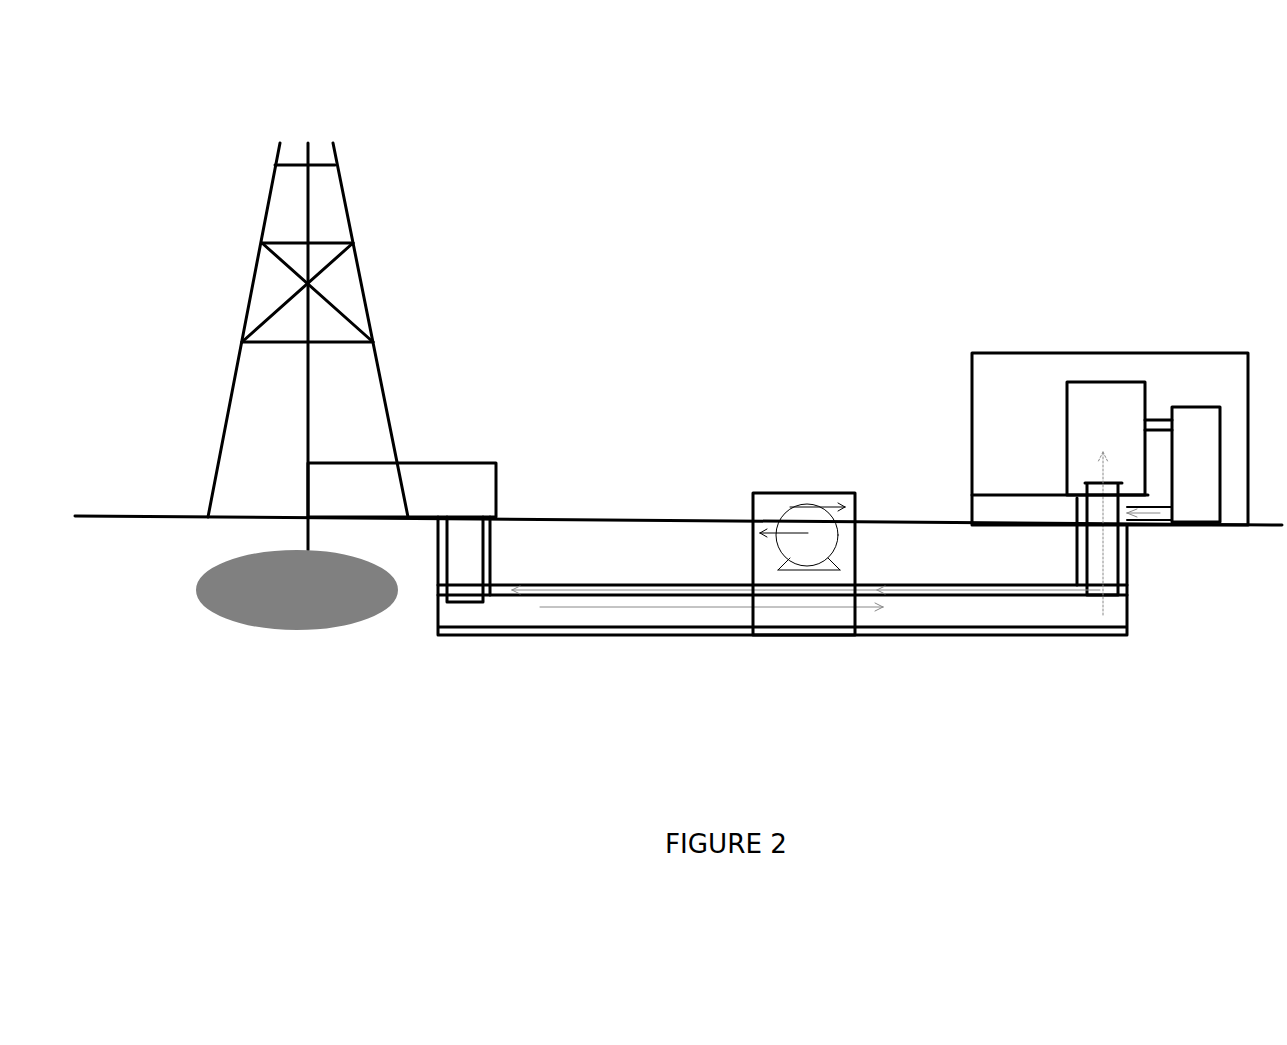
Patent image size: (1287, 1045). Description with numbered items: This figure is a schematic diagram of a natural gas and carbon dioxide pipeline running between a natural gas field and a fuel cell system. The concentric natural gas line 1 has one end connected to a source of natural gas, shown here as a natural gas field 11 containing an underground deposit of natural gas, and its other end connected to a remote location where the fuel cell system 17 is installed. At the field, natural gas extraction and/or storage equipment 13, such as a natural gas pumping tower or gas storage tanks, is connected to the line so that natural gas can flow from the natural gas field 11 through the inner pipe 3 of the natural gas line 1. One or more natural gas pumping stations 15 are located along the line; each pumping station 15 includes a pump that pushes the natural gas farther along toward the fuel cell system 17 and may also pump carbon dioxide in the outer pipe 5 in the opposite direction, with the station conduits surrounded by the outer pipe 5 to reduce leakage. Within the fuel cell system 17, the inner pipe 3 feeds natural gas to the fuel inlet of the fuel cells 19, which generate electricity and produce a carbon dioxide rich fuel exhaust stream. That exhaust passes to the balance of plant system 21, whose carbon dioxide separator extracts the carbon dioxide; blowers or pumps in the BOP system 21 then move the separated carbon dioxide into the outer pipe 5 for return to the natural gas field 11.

The concentric natural gas line 1 is at (782, 595).
The inner pipe 3 is at (682, 625).
The outer pipe 5 is at (540, 641).
The natural gas field 11 is at (330, 633).
The natural gas extraction and/or storage equipment 13 is at (437, 409).
The natural gas pumping station 15 is at (779, 484).
The fuel cell system 17 is at (1122, 396).
The fuel cells 19 is at (1088, 374).
The balance of plant (BOP) system 21 is at (1196, 395).